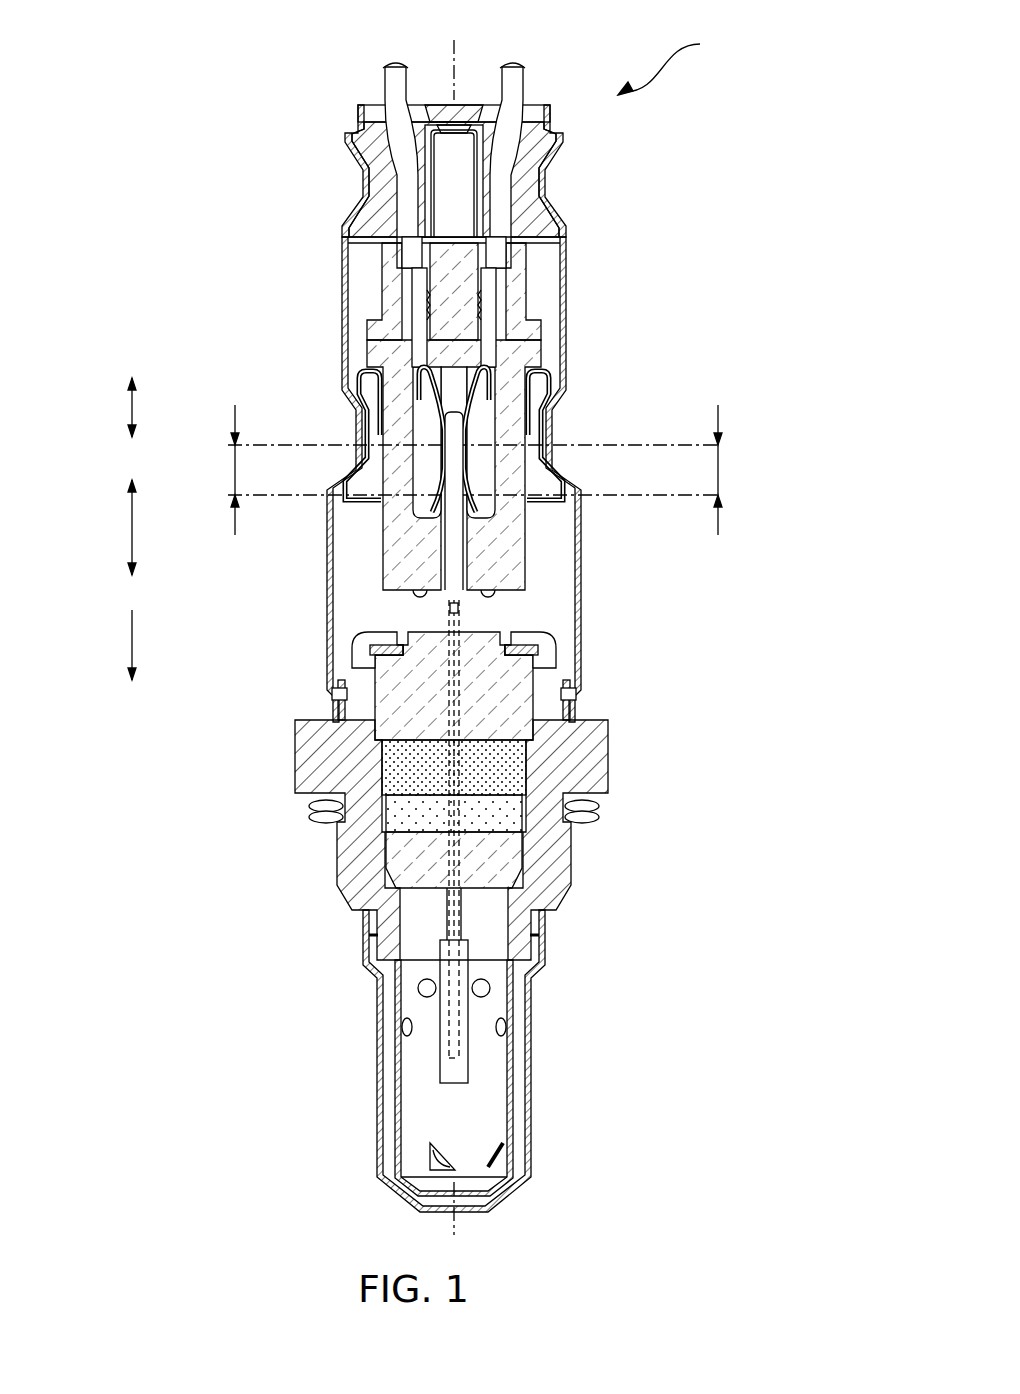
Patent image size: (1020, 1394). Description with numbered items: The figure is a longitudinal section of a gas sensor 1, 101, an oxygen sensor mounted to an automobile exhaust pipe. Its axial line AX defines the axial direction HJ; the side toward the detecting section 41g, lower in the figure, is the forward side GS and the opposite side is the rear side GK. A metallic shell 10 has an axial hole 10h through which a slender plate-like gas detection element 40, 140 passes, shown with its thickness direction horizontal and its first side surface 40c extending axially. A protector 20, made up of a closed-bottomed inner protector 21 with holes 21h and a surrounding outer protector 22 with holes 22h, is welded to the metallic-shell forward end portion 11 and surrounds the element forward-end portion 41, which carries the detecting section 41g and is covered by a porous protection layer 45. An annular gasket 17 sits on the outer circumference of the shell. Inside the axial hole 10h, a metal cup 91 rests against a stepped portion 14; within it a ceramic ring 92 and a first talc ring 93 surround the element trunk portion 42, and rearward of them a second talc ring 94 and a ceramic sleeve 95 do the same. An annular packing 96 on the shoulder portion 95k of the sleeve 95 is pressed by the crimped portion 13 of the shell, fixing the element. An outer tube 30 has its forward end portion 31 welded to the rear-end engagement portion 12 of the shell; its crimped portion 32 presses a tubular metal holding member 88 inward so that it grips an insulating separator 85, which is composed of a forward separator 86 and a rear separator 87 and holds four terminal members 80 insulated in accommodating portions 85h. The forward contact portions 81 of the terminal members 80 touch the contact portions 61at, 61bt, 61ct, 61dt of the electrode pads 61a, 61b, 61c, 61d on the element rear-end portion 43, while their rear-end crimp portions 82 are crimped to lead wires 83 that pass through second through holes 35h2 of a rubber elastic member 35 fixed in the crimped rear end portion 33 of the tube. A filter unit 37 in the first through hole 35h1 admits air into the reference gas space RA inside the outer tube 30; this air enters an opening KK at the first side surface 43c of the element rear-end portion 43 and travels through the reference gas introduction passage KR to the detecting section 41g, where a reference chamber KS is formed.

The gas sensor 1 is at (680, 58).
The gas sensor 101 is at (680, 58).
The metallic shell 10 is at (486, 819).
The axial hole 10h is at (486, 819).
The metallic-shell forward end portion 11 is at (622, 770).
The rear-end engagement portion 12 is at (486, 819).
The crimped portion 13 is at (486, 819).
The stepped portion 14 is at (486, 819).
The annular gasket 17 is at (590, 820).
The protector 20 is at (442, 1061).
The inner protector 21 is at (520, 1078).
The holes 21h is at (512, 1125).
The outer protector 22 is at (442, 1061).
The holes 22h is at (546, 1090).
The outer tube 30 is at (578, 313).
The forward end portion 31 is at (486, 819).
The crimped portion 32 is at (465, 467).
The rear end portion 33 is at (550, 162).
The elastic member 35 is at (406, 171).
The first through hole 35h1 is at (406, 171).
The second through holes 35h2 is at (378, 178).
The filter unit 37 is at (462, 207).
The gas detection element 40 is at (464, 693).
The sensor element 140 is at (464, 693).
The first side surface 40c is at (464, 693).
The element forward-end portion 41 is at (442, 1029).
The detecting section 41g is at (442, 1029).
The element trunk portion 42 is at (395, 676).
The element rear-end portion 43 is at (463, 474).
The first side surface 43c is at (385, 368).
The protection layer 45 is at (442, 1029).
The first electrode pad 61a is at (465, 467).
The second electrode pad 61b is at (465, 467).
The third electrode pad 61c is at (465, 467).
The fourth electrode pad 61d is at (557, 432).
The contact portion 61at is at (479, 470).
The contact portion 61bt is at (479, 470).
The contact portion 61ct is at (479, 470).
The contact portion 61dt is at (479, 470).
The terminal members 80 is at (488, 427).
The forward contact portions 81 is at (465, 467).
The rear-end crimp portions 82 is at (488, 285).
The lead wires 83 is at (392, 82).
The insulating separator 85 is at (463, 474).
The accommodating portions 85h is at (463, 474).
The forward separator 86 is at (463, 474).
The rear separator 87 is at (383, 290).
The metal holding member 88 is at (463, 474).
The metal cup 91 is at (387, 857).
The ceramic ring 92 is at (395, 838).
The first talc ring 93 is at (410, 800).
The second talc ring 94 is at (410, 765).
The sleeve 95 is at (378, 705).
The shoulder portion 95k is at (386, 650).
The annular packing 96 is at (395, 676).
The axial line AX is at (451, 623).
The rear side GK is at (116, 407).
The axial direction HJ is at (116, 527).
The forward side GS is at (116, 645).
The opening KK is at (464, 693).
The reference gas introduction passage KR is at (464, 693).
The reference gas space RA is at (464, 572).
The reference chamber KS is at (445, 1080).